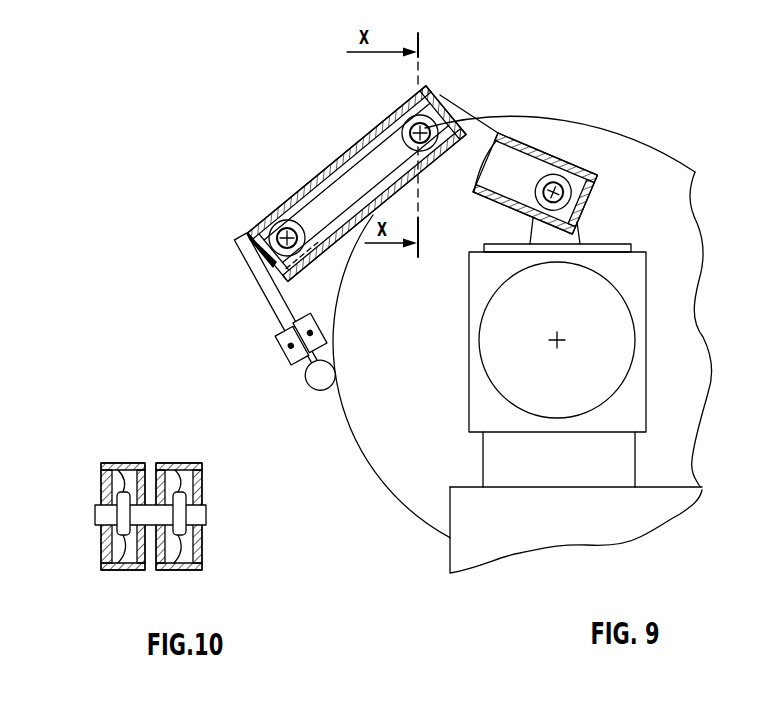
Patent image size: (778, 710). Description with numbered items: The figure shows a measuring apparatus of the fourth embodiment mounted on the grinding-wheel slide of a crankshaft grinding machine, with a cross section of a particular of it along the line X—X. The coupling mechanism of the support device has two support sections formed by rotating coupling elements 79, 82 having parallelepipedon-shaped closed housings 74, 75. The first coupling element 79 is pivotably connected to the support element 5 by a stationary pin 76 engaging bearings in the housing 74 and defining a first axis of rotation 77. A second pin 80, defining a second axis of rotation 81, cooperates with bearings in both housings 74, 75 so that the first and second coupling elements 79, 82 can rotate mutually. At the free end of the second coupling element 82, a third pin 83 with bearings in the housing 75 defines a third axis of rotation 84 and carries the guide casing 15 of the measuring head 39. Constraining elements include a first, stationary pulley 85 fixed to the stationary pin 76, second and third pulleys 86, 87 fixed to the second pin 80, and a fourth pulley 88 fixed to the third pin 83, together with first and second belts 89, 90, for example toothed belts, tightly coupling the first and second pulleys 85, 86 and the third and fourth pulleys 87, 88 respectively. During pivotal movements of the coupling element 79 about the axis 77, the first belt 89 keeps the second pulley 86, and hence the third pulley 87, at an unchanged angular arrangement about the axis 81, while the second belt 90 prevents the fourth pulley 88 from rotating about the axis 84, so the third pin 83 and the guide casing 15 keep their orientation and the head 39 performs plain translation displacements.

In FIG. 9, the support element 5 is at (697, 171).
In FIG. 9, the guide casing 15 is at (253, 260).
In FIG. 9, the measuring head 39 is at (272, 326).
In FIG. 9, the housing 74 is at (551, 174).
In FIG. 10, the housing 74 is at (101, 553).
In FIG. 9, the housing 75 is at (363, 140).
In FIG. 10, the housing 75 is at (202, 546).
In FIG. 9, the stationary pin 76 is at (588, 172).
In FIG. 9, the first axis of rotation 77 is at (635, 104).
In FIG. 9, the first coupling element 79 is at (550, 65).
In FIG. 10, the first coupling element 79 is at (90, 474).
In FIG. 9, the second pin 80 is at (423, 130).
In FIG. 10, the second pin 80 is at (101, 514).
In FIG. 9, the second axis of rotation 81 is at (500, 118).
In FIG. 9, the second coupling element 82 is at (298, 173).
In FIG. 10, the second coupling element 82 is at (217, 461).
In FIG. 9, the third pin 83 is at (287, 220).
In FIG. 9, the third axis of rotation 84 is at (325, 282).
In FIG. 9, the first pulley 85 is at (575, 237).
In FIG. 10, the second pulley 86 is at (123, 491).
In FIG. 9, the third pulley 87 is at (402, 108).
In FIG. 10, the third pulley 87 is at (176, 491).
In FIG. 9, the fourth pulley 88 is at (272, 226).
In FIG. 9, the first belt 89 is at (553, 176).
In FIG. 10, the first belt 89 is at (118, 571).
In FIG. 9, the second belt 90 is at (332, 162).
In FIG. 10, the second belt 90 is at (178, 568).